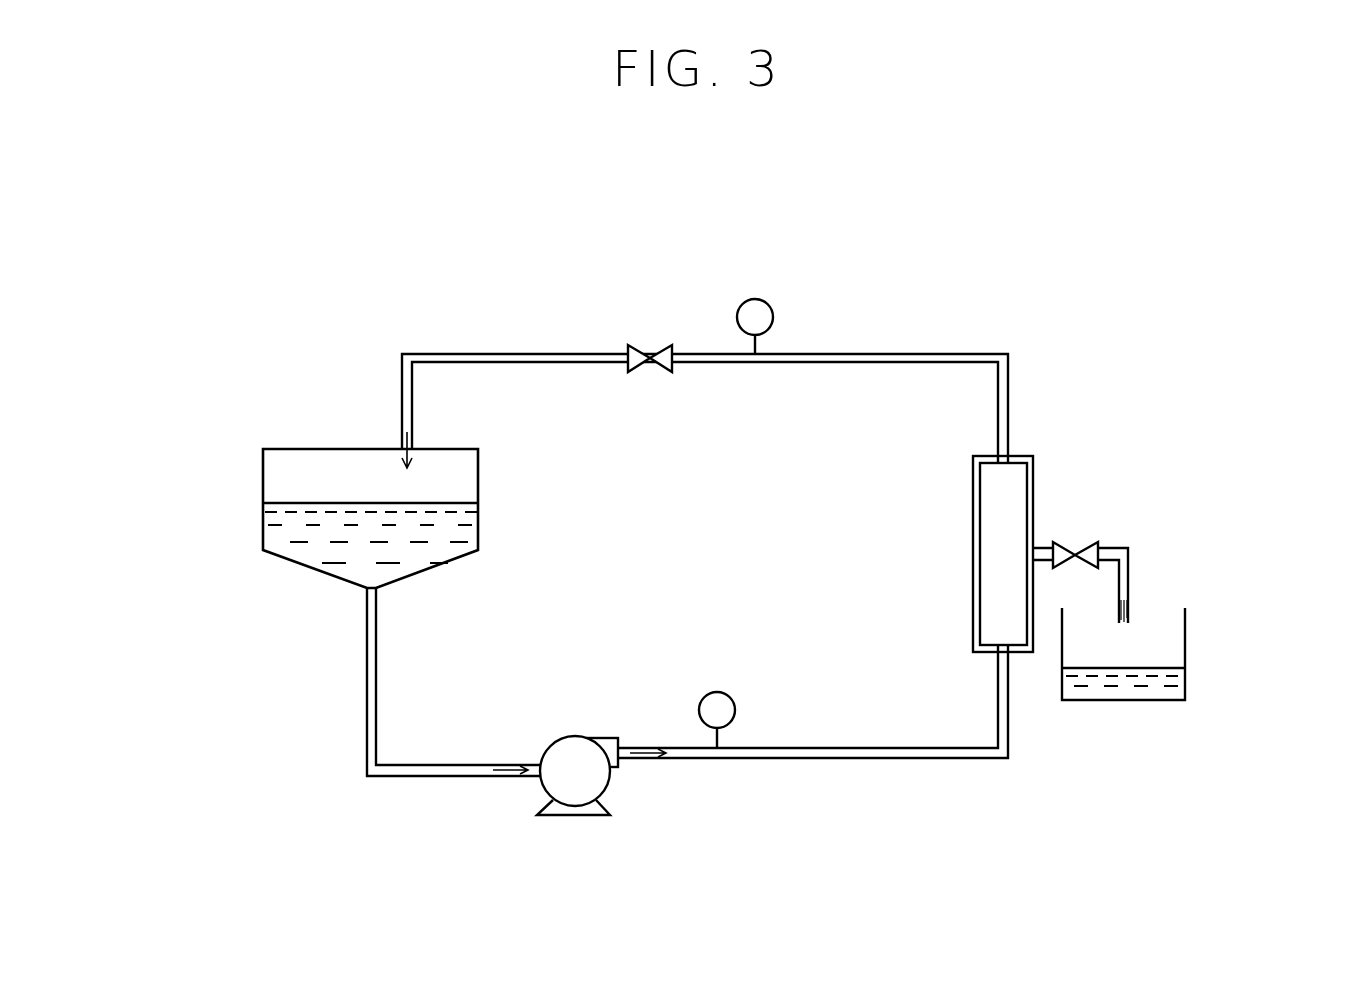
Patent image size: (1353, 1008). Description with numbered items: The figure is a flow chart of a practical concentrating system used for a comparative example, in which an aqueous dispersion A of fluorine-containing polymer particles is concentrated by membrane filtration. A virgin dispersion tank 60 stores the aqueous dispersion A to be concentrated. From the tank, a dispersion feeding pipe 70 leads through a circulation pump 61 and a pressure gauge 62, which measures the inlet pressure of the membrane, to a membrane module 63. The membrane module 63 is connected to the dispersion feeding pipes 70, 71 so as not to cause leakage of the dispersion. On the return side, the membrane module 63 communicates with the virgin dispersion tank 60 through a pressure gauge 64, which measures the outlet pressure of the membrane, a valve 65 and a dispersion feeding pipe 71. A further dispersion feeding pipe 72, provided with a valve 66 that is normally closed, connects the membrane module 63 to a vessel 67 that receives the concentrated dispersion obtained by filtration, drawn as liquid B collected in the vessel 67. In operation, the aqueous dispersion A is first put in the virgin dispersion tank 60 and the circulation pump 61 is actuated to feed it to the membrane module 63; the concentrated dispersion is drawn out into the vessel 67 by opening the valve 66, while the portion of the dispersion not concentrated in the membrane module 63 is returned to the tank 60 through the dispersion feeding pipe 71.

The virgin dispersion tank 60 is at (290, 449).
The circulation pump 61 is at (592, 808).
The pressure gauge 62 is at (720, 705).
The membrane module 63 is at (1032, 490).
The pressure gauge 64 is at (763, 313).
The valve 65 is at (667, 357).
The valve 66 is at (1088, 553).
The vessel 67 is at (1186, 625).
The dispersion feeding pipe 70 is at (438, 770).
The dispersion feeding pipe 71 is at (480, 355).
The dispersion feeding pipe 72 is at (1045, 555).
The aqueous dispersion to be concentrated A is at (312, 553).
The liquid B is at (1098, 695).